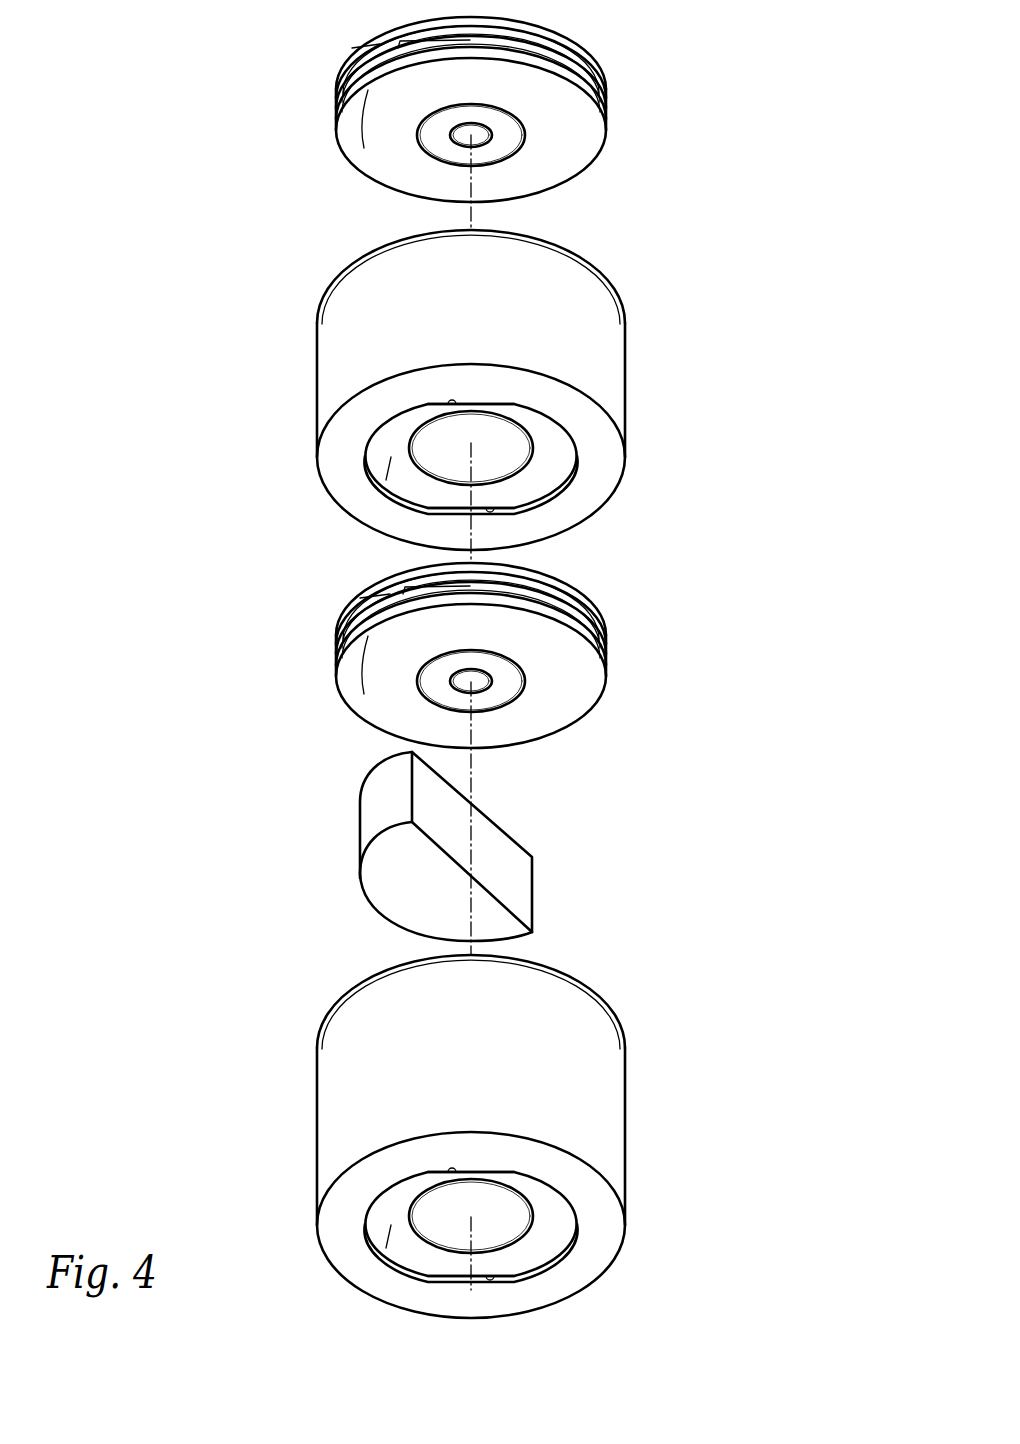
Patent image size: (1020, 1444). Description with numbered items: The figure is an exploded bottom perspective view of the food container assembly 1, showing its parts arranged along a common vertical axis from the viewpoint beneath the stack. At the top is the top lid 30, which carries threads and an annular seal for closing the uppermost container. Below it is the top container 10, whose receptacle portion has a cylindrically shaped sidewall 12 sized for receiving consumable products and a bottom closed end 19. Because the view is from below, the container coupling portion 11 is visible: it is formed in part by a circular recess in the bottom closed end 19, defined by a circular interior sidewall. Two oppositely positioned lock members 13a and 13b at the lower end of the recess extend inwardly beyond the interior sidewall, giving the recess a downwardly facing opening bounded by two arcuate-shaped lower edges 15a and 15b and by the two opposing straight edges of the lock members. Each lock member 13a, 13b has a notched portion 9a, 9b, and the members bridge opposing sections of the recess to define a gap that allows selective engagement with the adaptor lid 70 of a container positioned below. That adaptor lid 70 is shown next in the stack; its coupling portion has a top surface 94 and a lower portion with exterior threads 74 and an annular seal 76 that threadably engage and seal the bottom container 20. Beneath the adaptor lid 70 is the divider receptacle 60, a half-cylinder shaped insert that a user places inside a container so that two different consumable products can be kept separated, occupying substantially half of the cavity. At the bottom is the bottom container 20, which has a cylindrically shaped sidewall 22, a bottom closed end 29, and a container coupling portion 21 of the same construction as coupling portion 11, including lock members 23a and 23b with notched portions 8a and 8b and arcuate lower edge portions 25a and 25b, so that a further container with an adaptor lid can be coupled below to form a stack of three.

The food container assembly 1 is at (150, 100).
The top container 10 is at (513, 403).
The container coupling portion 11 is at (350, 508).
The cylindrically shaped sidewall 12 is at (335, 372).
The lock member 13a is at (500, 404).
The lock member 13b is at (490, 509).
The arcuate-shaped lower edge 15a is at (385, 460).
The arcuate-shaped lower edge 15b is at (573, 462).
The bottom closed end 19 is at (345, 440).
The notched portion 9a is at (452, 403).
The notched portion 9b is at (492, 513).
The bottom container 20 is at (503, 1136).
The container coupling portion 21 is at (350, 1276).
The cylindrically shaped sidewall 22 is at (335, 1118).
The lock member 23a is at (503, 1172).
The lock member 23b is at (490, 1277).
The arcuate lower edge portion 25a is at (385, 1228).
The arcuate lower edge portion 25b is at (572, 1230).
The bottom closed end 29 is at (345, 1208).
The notched portion 8a is at (452, 1171).
The notched portion 8b is at (492, 1280).
The top lid 30 is at (656, 117).
The divider receptacle 60 is at (589, 867).
The adaptor lid 70 is at (664, 680).
The exterior threads 74 is at (549, 44).
The annular seal 76 is at (362, 131).
The top surface 94 is at (355, 48).